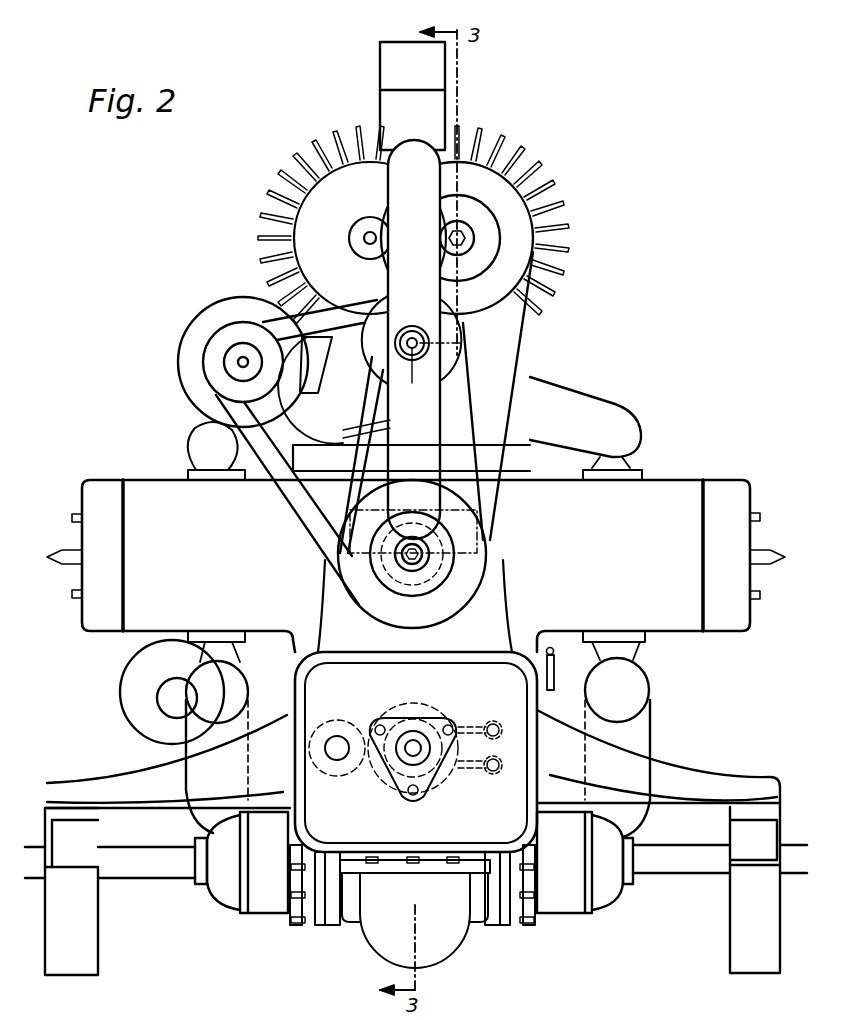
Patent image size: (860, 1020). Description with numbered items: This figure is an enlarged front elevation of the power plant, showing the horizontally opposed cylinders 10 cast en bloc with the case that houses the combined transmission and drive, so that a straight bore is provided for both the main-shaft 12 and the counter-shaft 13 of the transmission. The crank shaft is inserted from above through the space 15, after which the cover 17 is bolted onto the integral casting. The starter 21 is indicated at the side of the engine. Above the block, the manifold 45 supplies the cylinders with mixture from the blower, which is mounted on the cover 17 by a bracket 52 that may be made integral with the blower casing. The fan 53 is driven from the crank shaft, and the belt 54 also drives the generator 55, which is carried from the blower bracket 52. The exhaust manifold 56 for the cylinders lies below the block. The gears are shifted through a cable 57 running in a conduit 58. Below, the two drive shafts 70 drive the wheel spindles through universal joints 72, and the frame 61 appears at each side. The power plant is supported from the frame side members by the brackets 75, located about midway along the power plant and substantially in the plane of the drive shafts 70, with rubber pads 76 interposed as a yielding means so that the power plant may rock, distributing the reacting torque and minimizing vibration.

The cylinders 10 is at (416, 561).
The main-shaft 12 is at (410, 762).
The counter-shaft 13 is at (336, 735).
The space 15 is at (470, 517).
The cover 17 is at (520, 462).
The starter 21 is at (140, 713).
The manifold 45 is at (545, 398).
The bracket 52 is at (522, 362).
The fan 53 is at (475, 332).
The belt 54 is at (298, 503).
The generator 55 is at (194, 319).
The exhaust manifold 56 is at (212, 732).
The cable 57 is at (555, 655).
The conduit 58 is at (552, 679).
The frame 61 is at (100, 962).
The drive shafts 70 is at (128, 868).
The universal joints 72 is at (414, 862).
The brackets 75 is at (692, 783).
The rubber pads 76 is at (775, 803).